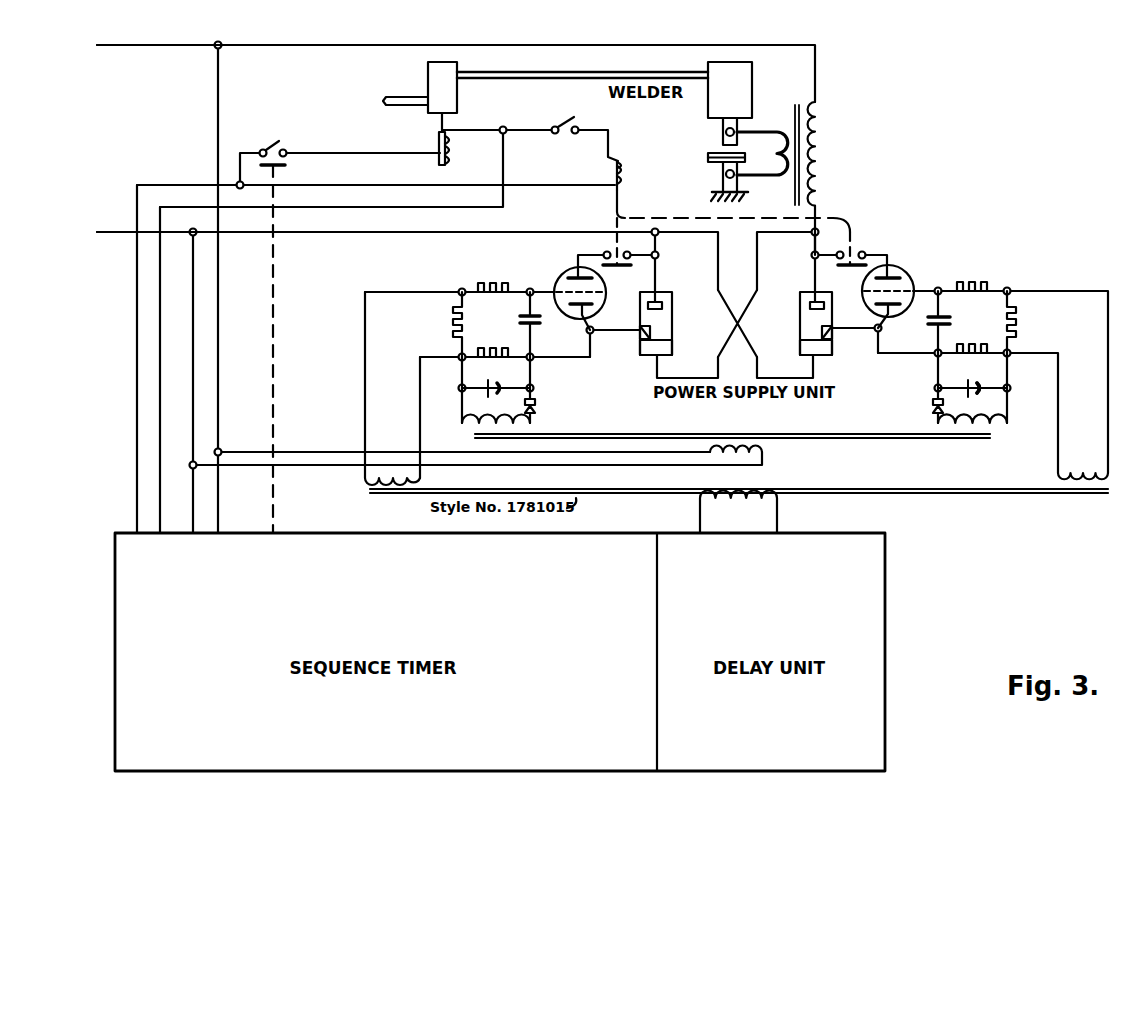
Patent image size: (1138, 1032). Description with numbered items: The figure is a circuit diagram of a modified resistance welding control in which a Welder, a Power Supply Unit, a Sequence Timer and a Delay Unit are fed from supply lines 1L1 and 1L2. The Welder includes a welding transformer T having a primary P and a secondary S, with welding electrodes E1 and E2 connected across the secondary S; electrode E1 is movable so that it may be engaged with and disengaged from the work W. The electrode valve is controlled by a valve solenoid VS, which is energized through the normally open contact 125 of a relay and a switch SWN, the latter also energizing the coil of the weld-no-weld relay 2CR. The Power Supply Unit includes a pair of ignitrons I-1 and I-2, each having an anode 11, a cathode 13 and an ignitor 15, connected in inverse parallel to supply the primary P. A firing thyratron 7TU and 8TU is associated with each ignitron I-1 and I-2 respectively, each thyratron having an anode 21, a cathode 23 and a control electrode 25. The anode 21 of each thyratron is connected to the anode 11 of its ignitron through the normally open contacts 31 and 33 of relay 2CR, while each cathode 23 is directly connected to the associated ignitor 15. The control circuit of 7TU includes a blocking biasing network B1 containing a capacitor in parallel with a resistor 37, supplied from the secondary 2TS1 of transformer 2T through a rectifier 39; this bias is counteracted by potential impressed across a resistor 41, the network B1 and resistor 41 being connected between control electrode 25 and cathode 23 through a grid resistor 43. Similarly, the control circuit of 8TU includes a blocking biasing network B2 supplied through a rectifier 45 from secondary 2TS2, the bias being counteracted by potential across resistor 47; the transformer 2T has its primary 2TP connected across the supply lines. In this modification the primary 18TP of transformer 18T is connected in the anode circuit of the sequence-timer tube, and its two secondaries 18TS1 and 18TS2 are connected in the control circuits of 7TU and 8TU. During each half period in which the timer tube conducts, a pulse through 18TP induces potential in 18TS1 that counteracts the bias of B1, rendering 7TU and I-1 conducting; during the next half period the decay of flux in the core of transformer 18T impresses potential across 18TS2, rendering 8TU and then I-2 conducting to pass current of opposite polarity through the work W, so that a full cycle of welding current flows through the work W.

The supply line 1 1L1 is at (268, 48).
The supply line 2 1L2 is at (417, 232).
The normally open contact 125 is at (281, 143).
The valve solenoid VS is at (437, 142).
The switch SWN is at (578, 116).
The weld-no-weld relay 2CR is at (612, 170).
The welding electrode E1 is at (723, 132).
The welding electrode E2 is at (723, 175).
The work W is at (708, 155).
The secondary S is at (777, 153).
The welding transformer T is at (797, 104).
The primary P is at (817, 134).
The normally open contact 33 is at (603, 252).
The normally open contact 31 is at (856, 238).
The firing thyratron 8TU is at (560, 273).
The firing thyratron 7TU is at (900, 276).
The anode 21 is at (595, 279).
The control electrode 25 is at (599, 297).
The cathode 23 is at (590, 316).
The anode 11 is at (657, 292).
The ignitron I-2 is at (672, 317).
The ignitron I-1 is at (800, 317).
The ignitor 15 is at (650, 334).
The cathode 13 is at (672, 354).
The resistor 47 is at (455, 323).
The grid resistor 43 is at (985, 288).
The resistor 41 is at (1016, 322).
The blocking biasing network B2 is at (497, 377).
The blocking biasing network B1 is at (966, 376).
The resistor 37 is at (975, 387).
The rectifier 45 is at (537, 402).
The rectifier 39 is at (932, 405).
The secondary 2TS2 is at (503, 422).
The secondary 2TS1 is at (1000, 427).
The primary 2TP is at (768, 452).
The transformer 2T is at (870, 440).
The transformer 18T is at (906, 495).
The secondary 18TS2 is at (421, 480).
The secondary 18TS1 is at (1058, 469).
The primary 18TP is at (757, 504).